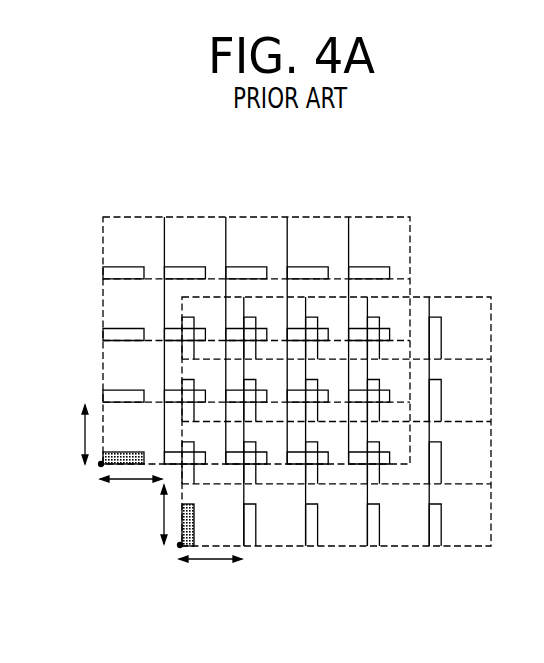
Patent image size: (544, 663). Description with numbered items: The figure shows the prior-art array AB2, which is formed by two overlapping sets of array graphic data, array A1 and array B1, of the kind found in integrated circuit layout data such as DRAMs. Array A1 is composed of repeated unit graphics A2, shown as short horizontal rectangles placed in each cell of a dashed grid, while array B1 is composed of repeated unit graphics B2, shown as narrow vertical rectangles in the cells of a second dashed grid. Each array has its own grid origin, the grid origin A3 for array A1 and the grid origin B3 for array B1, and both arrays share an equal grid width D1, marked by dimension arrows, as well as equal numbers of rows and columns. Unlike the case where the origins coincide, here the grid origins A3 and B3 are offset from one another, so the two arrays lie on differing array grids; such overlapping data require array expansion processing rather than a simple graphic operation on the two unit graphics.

The array A1 is at (326, 216).
The array B1 is at (492, 505).
The array AB2 is at (492, 318).
The unit graphic A2 is at (130, 452).
The unit graphic B2 is at (194, 524).
The grid origin A3 is at (100, 465).
The grid origin B3 is at (179, 546).
The grid width D1 is at (85, 432).